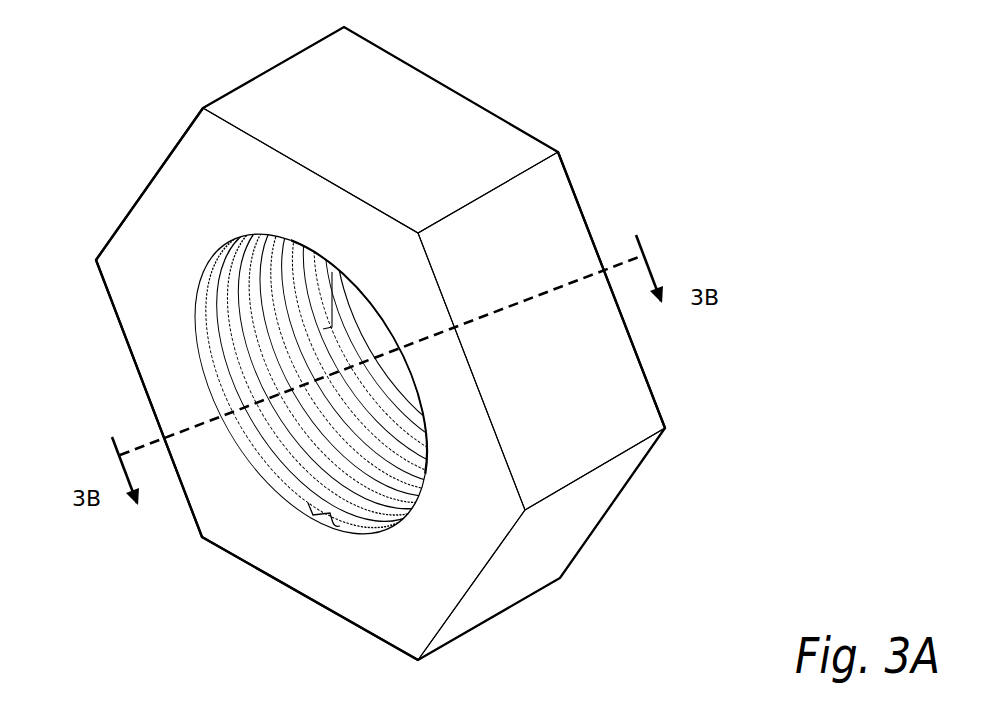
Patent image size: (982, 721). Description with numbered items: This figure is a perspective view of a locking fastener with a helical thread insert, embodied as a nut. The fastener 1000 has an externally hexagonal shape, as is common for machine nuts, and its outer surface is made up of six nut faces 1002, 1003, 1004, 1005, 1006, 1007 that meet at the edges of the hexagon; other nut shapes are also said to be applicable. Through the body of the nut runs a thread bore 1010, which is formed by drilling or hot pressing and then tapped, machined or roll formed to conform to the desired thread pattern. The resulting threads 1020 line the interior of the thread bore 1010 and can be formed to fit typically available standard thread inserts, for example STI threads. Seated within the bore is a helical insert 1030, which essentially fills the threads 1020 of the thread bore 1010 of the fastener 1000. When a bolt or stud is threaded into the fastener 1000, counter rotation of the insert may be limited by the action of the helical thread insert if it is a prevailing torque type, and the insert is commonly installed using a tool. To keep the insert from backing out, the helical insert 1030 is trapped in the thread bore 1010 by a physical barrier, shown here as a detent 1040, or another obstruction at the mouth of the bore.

The fastener 1000 is at (582, 72).
The nut face 1002 is at (387, 77).
The nut face 1003 is at (611, 400).
The nut face 1004 is at (575, 508).
The nut face 1005 is at (318, 612).
The nut face 1006 is at (140, 401).
The nut face 1007 is at (172, 140).
The thread bore 1010 is at (596, 199).
The threads 1020 is at (240, 292).
The helical insert 1030 is at (252, 447).
The detent 1040 is at (325, 517).